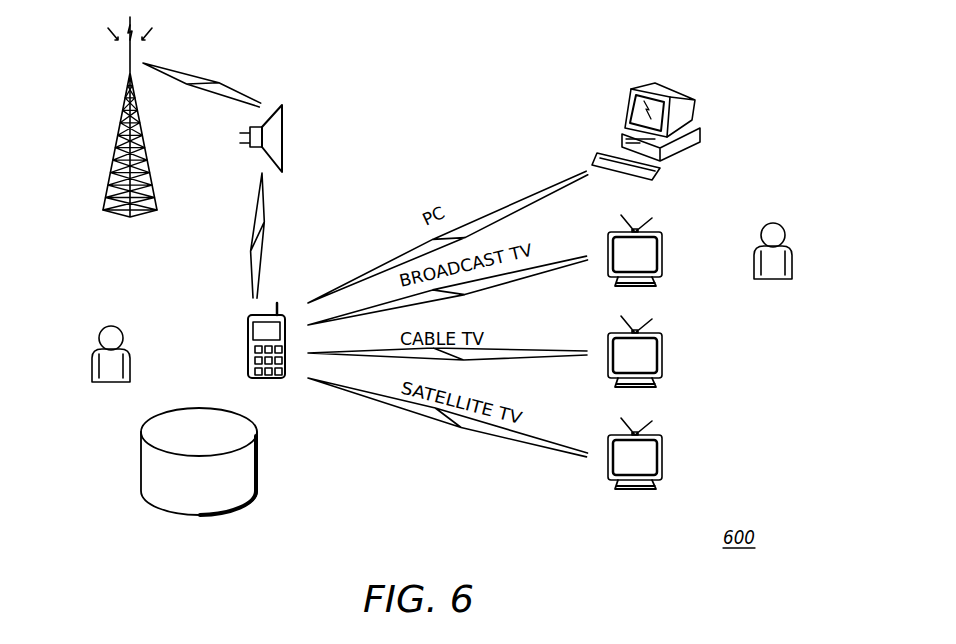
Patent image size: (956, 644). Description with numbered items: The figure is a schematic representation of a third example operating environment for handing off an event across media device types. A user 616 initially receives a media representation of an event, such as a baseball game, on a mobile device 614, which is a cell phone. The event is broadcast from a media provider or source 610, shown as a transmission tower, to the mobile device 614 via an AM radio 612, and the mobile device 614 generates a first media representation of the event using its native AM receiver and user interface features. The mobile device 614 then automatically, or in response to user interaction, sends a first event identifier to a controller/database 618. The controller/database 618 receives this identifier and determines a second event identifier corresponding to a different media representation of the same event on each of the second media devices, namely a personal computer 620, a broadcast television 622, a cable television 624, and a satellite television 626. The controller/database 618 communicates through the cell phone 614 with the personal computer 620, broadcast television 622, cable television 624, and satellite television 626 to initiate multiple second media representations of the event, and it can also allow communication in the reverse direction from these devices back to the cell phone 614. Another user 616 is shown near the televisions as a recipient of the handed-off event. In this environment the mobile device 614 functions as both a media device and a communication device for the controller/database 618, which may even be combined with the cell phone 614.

The media provider or source 610 is at (115, 124).
The AM radio 612 is at (284, 107).
The mobile device 614 is at (247, 340).
The user 616 is at (92, 356).
The controller/database 618 is at (140, 458).
The personal computer 620 is at (688, 88).
The broadcast television 622 is at (663, 252).
The cable television 624 is at (663, 353).
The satellite television 626 is at (663, 455).